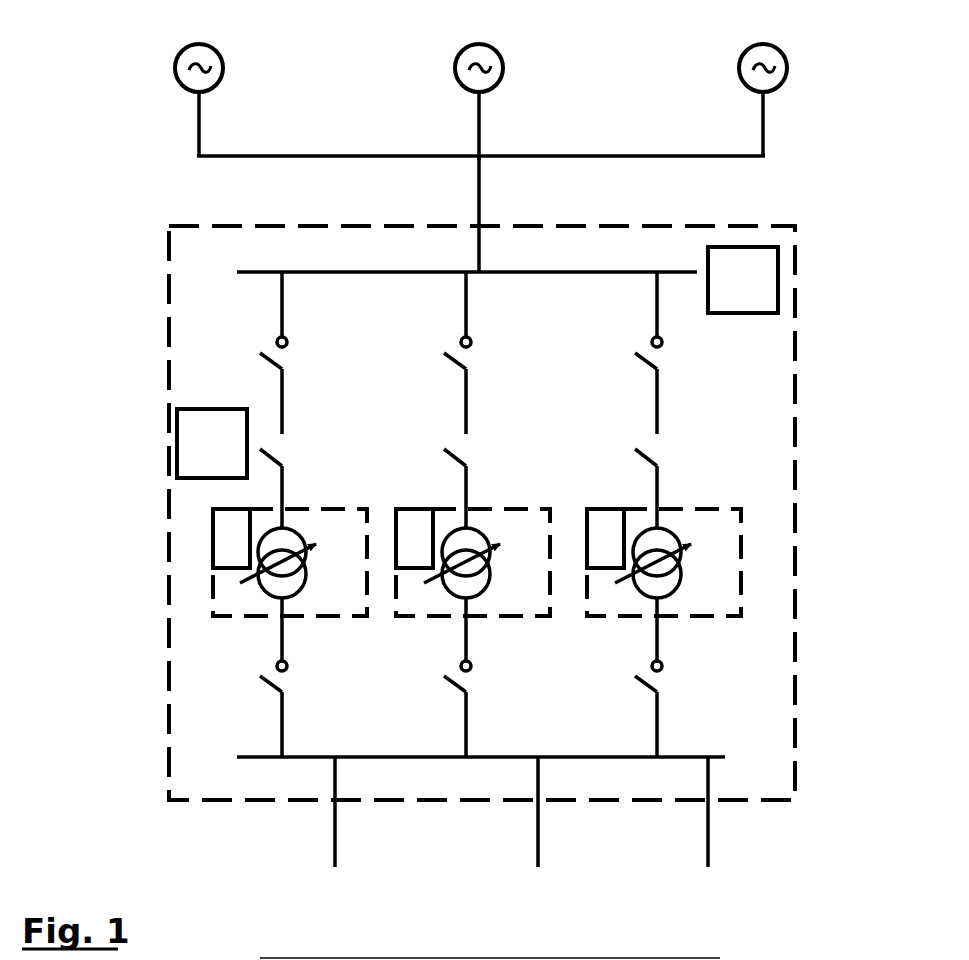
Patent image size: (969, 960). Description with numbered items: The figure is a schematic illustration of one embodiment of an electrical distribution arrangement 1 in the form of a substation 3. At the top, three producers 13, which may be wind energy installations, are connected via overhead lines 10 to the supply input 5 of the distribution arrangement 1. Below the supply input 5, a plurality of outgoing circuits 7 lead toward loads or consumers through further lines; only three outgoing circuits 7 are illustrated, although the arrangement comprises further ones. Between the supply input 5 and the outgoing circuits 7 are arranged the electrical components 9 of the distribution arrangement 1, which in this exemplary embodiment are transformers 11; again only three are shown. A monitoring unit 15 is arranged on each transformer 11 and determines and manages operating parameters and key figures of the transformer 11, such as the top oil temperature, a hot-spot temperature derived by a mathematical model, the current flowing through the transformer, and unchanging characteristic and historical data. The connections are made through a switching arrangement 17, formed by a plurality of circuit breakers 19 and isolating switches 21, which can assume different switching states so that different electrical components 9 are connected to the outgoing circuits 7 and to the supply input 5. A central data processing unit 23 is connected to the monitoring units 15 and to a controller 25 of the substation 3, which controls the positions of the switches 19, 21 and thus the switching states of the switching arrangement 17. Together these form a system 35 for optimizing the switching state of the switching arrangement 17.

The electrical distribution arrangement 1 is at (508, 531).
The substation 3 is at (481, 514).
The supply input 5 is at (473, 224).
The outgoing circuits 7 is at (333, 830).
The electrical components 9 is at (332, 571).
The overhead lines 10 is at (479, 128).
The transformers 11 is at (321, 604).
The producers 13 is at (222, 65).
The monitoring unit 15 is at (244, 526).
The switching arrangement 17 is at (208, 391).
The circuit breakers 19 is at (287, 358).
The isolating switches 21 is at (287, 453).
The central data processing unit 23 is at (728, 296).
The controller 25 is at (197, 459).
The system for optimizing the switching state 35 is at (812, 246).